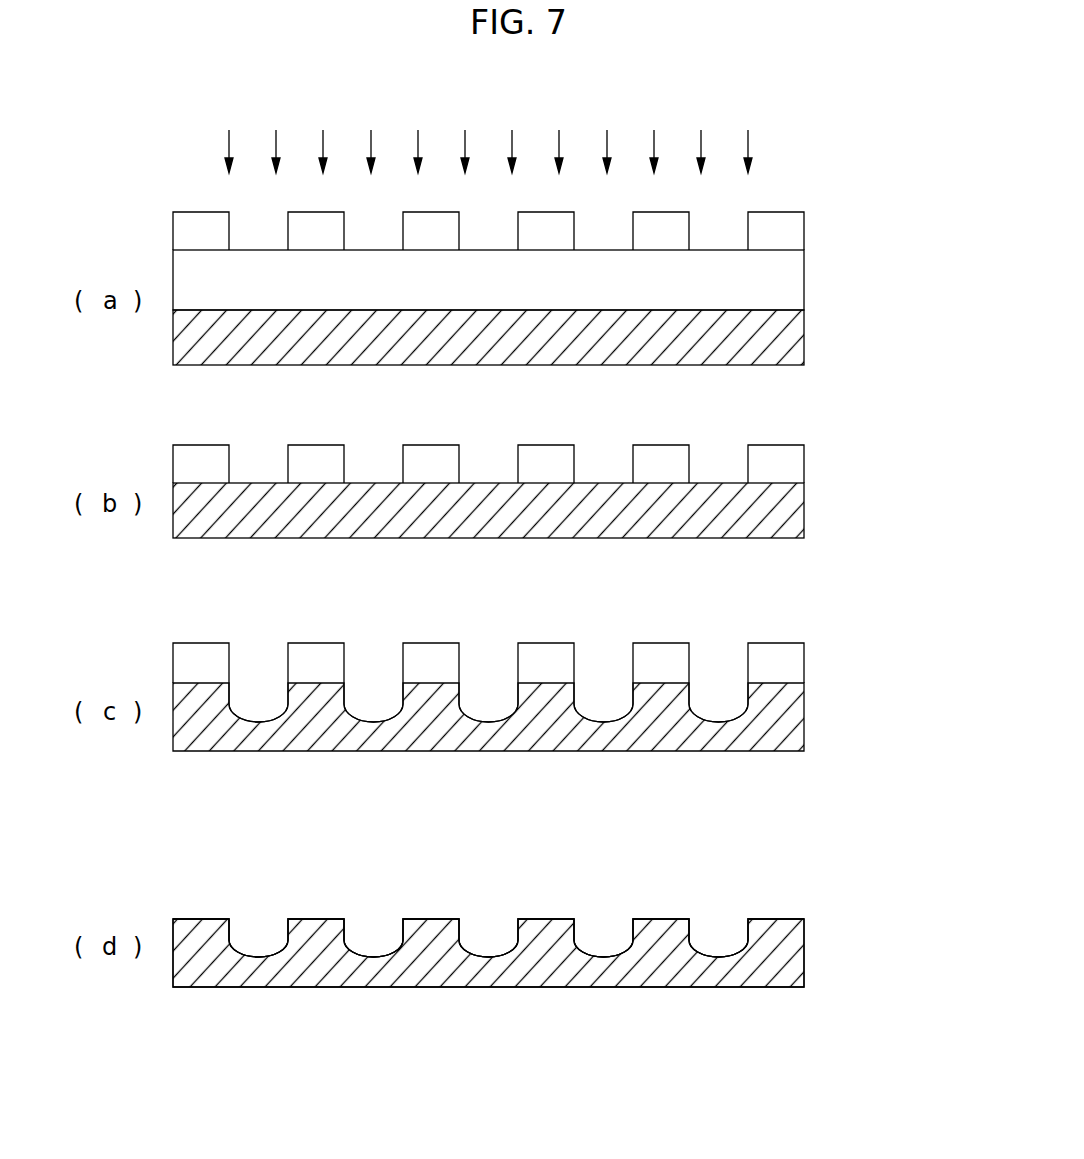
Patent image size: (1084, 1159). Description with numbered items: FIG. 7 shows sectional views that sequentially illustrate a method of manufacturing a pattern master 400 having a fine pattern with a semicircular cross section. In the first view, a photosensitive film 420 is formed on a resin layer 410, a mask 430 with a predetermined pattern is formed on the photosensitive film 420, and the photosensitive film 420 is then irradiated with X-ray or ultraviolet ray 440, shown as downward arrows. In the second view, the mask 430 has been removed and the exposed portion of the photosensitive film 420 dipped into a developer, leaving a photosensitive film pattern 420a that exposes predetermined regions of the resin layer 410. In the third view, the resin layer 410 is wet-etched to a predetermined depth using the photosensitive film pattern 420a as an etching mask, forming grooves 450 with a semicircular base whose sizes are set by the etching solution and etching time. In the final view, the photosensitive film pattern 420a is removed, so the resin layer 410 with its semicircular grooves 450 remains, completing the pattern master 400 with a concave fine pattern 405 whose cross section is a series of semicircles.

The pattern master 400 is at (541, 904).
The concave fine pattern 405 is at (740, 937).
The resin layer 410 is at (795, 345).
The photosensitive film 420 is at (795, 288).
The photosensitive film pattern 420a is at (795, 460).
The mask 430 is at (795, 236).
The X-ray or ultraviolet ray 440 is at (749, 143).
The grooves 450 is at (740, 698).